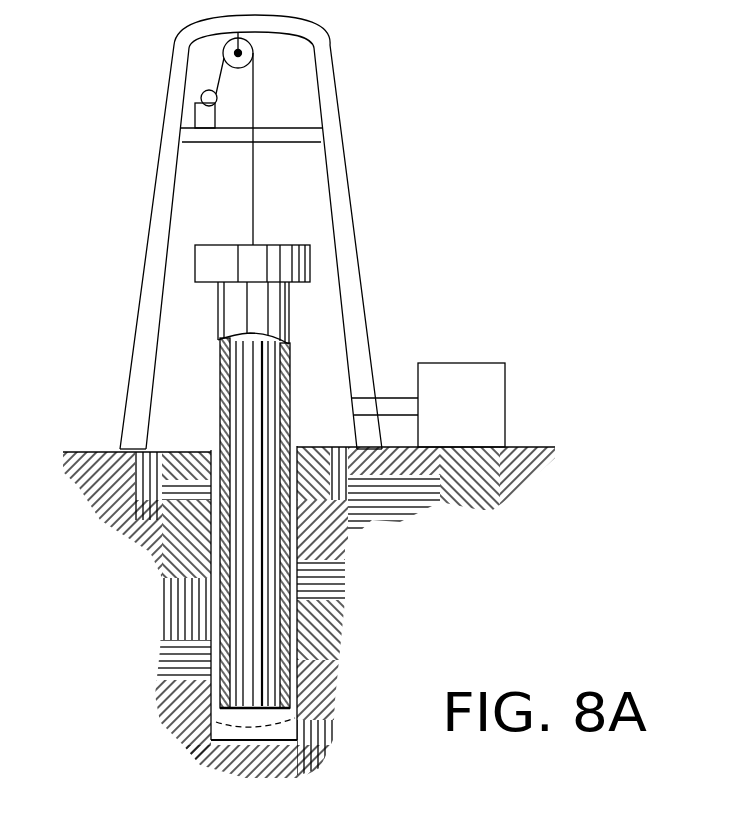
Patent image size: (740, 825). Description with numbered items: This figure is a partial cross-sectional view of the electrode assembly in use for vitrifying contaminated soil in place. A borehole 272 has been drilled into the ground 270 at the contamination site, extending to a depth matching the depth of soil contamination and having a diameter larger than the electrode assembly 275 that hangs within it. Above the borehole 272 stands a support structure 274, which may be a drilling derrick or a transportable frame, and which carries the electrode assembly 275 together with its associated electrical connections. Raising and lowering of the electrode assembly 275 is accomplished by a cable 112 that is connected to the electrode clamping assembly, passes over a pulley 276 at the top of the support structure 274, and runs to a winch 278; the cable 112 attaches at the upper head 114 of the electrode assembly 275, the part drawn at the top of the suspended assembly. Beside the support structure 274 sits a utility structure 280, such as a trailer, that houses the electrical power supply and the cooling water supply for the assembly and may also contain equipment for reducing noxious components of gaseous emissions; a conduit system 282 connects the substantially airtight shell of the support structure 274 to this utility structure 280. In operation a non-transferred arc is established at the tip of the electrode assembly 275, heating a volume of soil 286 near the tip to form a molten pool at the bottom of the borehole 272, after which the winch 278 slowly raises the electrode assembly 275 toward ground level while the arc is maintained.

The cable 112 is at (256, 173).
The hammer head 114 is at (287, 223).
The ground 270 is at (382, 553).
The borehole 272 is at (212, 446).
The support structure 274 is at (341, 108).
The electrode assembly 275 is at (295, 410).
The pulley 276 is at (246, 59).
The winch 278 is at (203, 122).
The utility structure 280 is at (503, 365).
The conduit system 282 is at (390, 397).
The volume of soil 286 is at (314, 746).